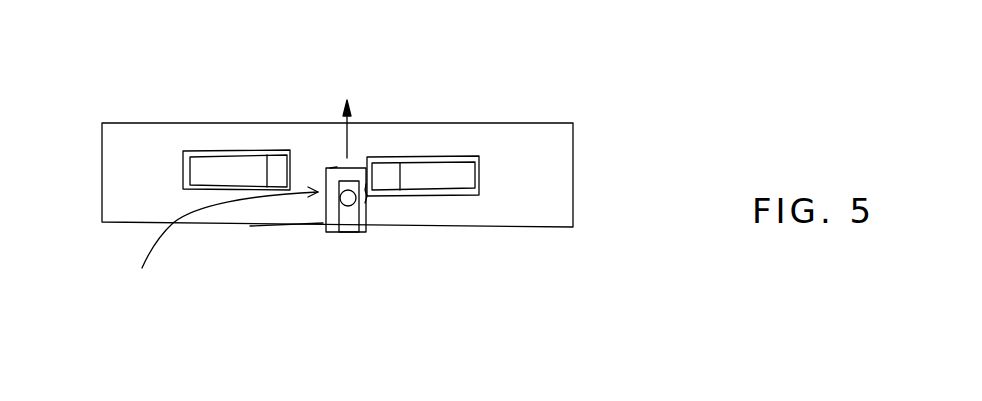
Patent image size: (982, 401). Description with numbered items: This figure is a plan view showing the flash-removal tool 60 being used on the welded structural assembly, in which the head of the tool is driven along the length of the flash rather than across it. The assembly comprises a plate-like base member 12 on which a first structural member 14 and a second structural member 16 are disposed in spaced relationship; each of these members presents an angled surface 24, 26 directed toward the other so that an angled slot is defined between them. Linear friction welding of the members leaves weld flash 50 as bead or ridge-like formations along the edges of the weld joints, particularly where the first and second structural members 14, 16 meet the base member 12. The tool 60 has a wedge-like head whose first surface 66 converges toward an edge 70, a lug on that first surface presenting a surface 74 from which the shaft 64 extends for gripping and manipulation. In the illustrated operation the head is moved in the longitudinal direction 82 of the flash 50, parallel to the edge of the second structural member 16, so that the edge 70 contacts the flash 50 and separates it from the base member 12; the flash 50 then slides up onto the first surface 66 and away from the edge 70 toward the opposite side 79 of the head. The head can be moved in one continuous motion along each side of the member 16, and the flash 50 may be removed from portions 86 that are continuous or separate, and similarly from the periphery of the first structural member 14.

The base member 12 is at (530, 132).
The first structural member 14 is at (207, 165).
The second structural member 16 is at (438, 170).
The angled surface 24 is at (280, 165).
The angled surface 26 is at (385, 167).
The weld flash 50 is at (187, 150).
The tool 60 is at (220, 246).
The shaft 64 is at (343, 235).
The first surface 66 is at (250, 226).
The edge 70 is at (337, 167).
The surface of the lug 74 is at (337, 197).
The opposite side 79 is at (345, 210).
The longitudinal direction 82 is at (343, 165).
The portions 86 is at (366, 203).